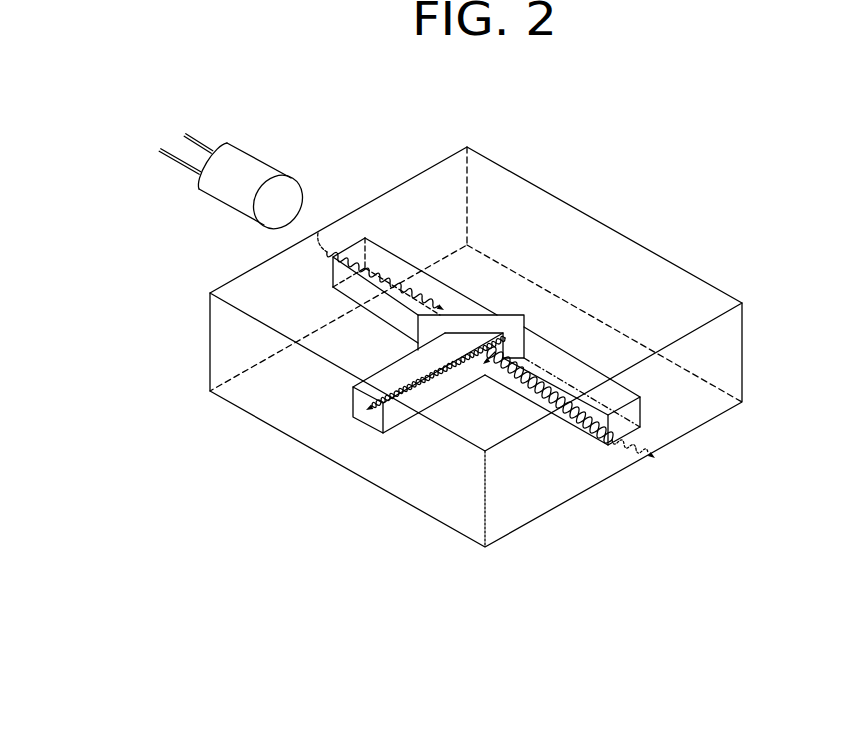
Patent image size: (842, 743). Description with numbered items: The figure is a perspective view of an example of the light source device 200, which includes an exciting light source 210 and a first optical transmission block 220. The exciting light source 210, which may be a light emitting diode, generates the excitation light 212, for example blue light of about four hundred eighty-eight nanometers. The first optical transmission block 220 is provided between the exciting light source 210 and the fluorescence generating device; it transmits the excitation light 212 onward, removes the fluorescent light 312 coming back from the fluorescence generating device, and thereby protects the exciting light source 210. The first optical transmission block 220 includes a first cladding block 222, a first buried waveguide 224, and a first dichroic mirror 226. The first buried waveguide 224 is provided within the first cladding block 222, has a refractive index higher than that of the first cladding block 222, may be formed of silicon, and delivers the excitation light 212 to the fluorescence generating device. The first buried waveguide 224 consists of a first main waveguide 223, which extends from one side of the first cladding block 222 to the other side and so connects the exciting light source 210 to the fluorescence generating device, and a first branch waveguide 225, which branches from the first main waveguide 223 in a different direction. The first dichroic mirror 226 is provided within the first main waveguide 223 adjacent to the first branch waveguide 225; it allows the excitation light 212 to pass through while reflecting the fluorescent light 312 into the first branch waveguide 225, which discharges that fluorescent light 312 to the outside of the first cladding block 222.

The light source device 200 is at (707, 185).
The exciting light source 210 is at (243, 165).
The excitation light 212 is at (378, 267).
The fluorescent light 312 is at (487, 343).
The first optical transmission block 220 is at (440, 646).
The first cladding block 222 is at (506, 521).
The first main waveguide 223 is at (513, 368).
The first buried waveguide 224 is at (440, 583).
The first branch waveguide 225 is at (420, 400).
The first dichroic mirror 226 is at (418, 328).